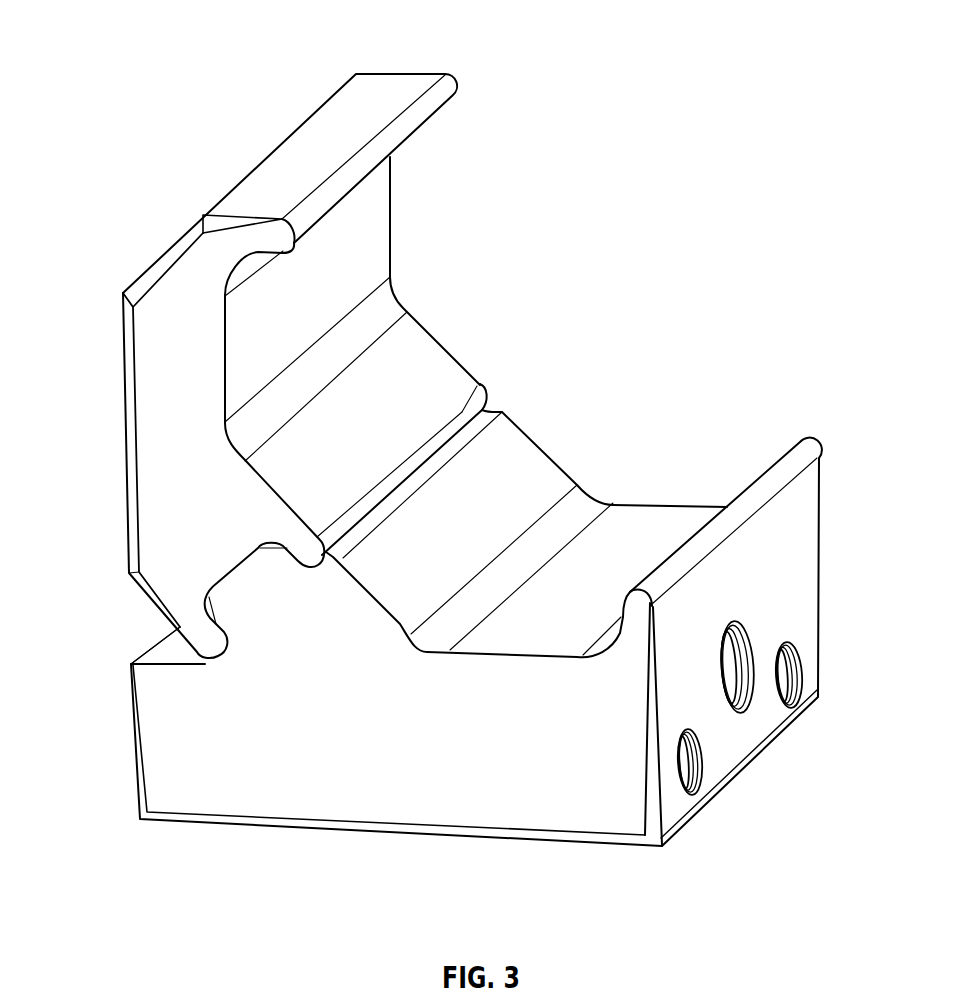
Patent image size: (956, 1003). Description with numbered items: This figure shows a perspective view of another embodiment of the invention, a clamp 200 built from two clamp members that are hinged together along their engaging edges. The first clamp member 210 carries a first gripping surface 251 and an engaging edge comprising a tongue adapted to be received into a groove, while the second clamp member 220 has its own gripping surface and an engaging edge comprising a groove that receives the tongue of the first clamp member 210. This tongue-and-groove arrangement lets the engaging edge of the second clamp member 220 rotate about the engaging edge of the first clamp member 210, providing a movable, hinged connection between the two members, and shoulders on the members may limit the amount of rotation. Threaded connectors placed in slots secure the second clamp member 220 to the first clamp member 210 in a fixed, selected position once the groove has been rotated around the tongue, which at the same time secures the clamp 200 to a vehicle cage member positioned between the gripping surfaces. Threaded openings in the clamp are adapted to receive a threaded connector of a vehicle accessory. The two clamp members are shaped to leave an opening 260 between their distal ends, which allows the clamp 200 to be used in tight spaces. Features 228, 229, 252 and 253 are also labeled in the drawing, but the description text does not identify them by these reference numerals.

The clamp 200 is at (712, 227).
The first clamp member 210 is at (157, 755).
The second clamp member 220 is at (150, 383).
The rolled upper edge of arm 228 is at (423, 122).
The side wall with mounting holes 229 is at (777, 497).
The first gripping surface 251 is at (650, 545).
The web 252 is at (363, 235).
The ridge 253 is at (465, 418).
The opening 260 is at (557, 220).